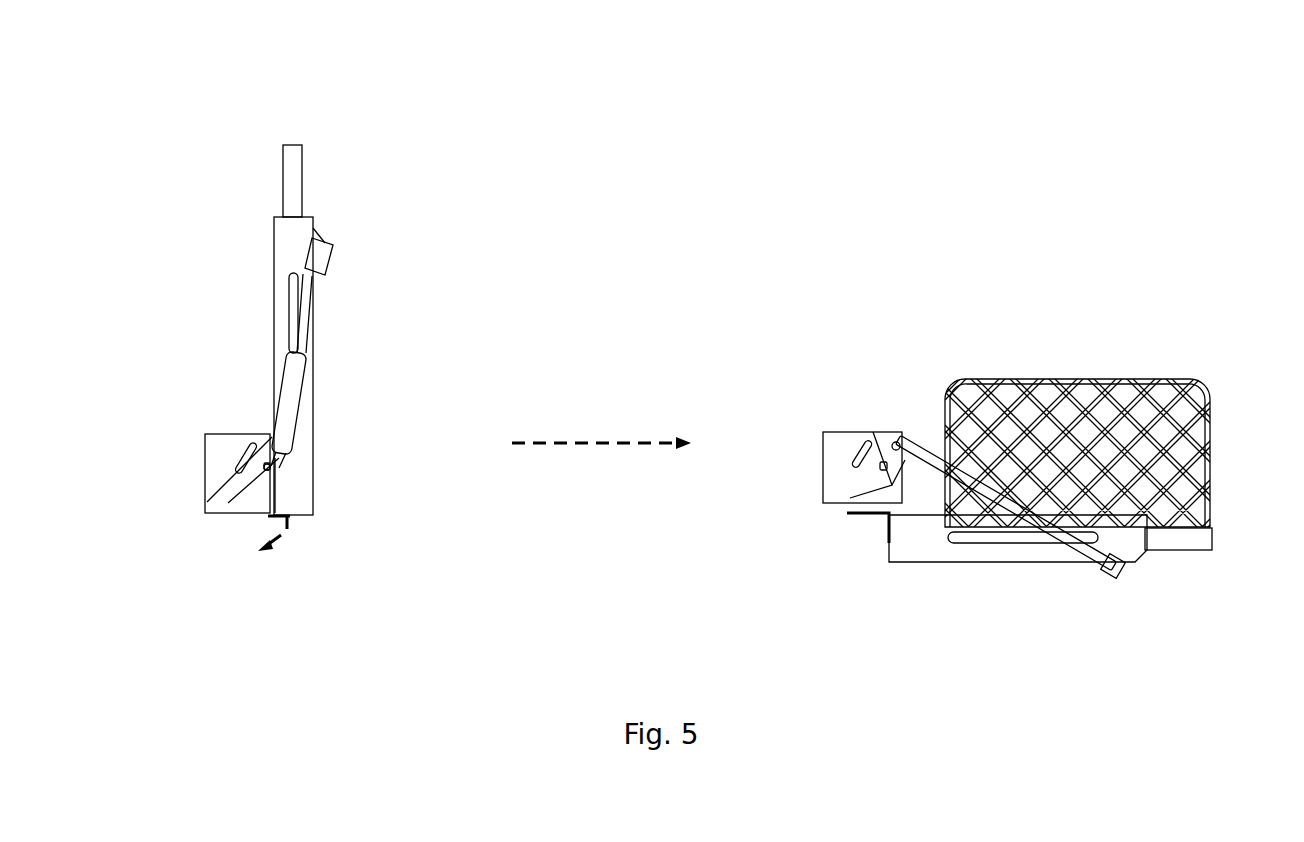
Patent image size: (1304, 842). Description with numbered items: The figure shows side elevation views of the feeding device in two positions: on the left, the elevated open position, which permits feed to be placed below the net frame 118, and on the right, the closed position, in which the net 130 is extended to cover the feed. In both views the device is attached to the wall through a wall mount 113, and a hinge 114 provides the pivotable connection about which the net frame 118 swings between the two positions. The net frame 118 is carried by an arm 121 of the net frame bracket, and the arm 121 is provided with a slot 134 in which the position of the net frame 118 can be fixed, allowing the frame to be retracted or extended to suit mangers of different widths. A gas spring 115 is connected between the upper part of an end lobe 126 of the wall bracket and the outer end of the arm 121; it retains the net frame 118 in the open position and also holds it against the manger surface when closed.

The wall mount 113 is at (220, 436).
The hinge 114 is at (273, 517).
The gas spring 115 is at (920, 320).
The net frame 118 is at (1238, 645).
The arm 121 is at (272, 248).
The end lobe 126 is at (245, 505).
The net 130 is at (1072, 380).
The slot 134 is at (957, 603).